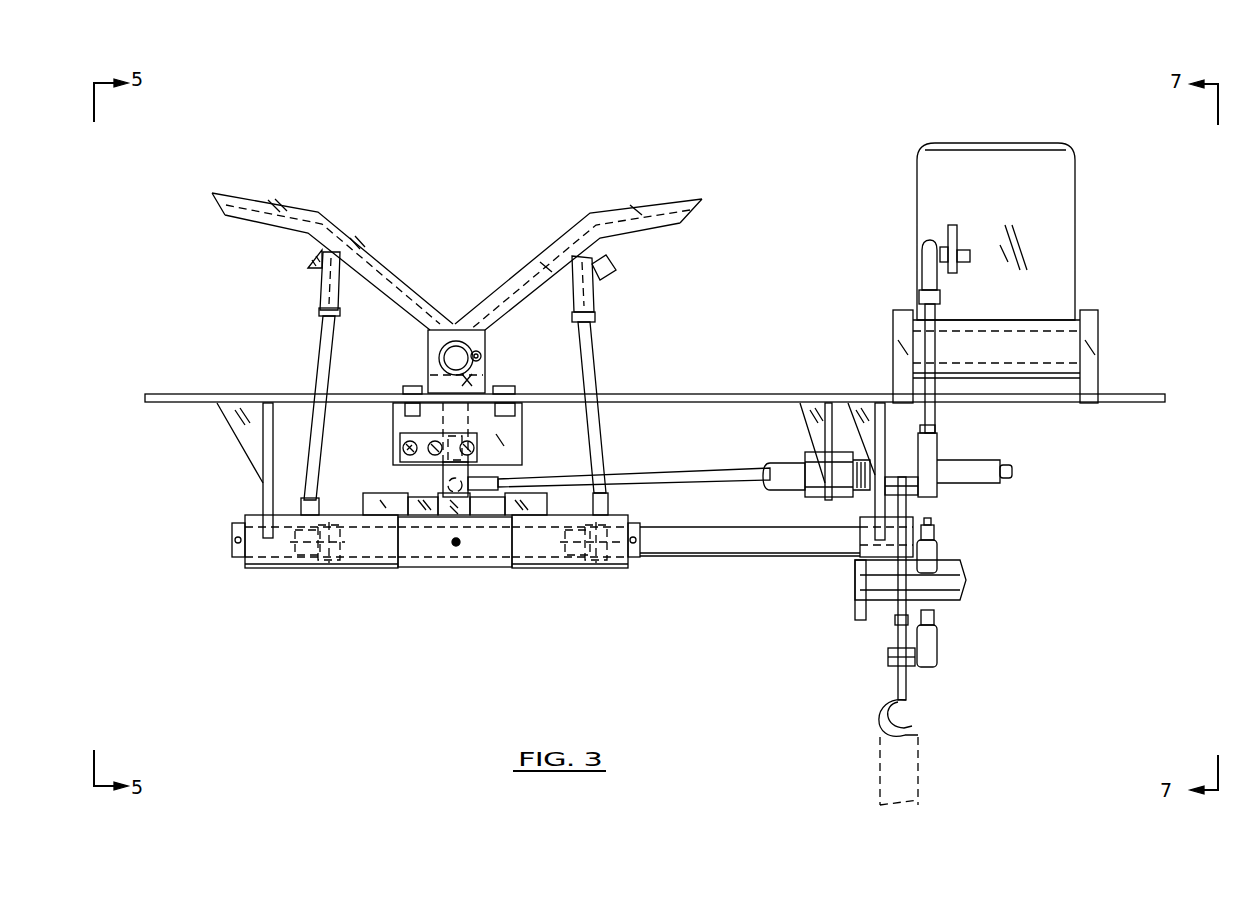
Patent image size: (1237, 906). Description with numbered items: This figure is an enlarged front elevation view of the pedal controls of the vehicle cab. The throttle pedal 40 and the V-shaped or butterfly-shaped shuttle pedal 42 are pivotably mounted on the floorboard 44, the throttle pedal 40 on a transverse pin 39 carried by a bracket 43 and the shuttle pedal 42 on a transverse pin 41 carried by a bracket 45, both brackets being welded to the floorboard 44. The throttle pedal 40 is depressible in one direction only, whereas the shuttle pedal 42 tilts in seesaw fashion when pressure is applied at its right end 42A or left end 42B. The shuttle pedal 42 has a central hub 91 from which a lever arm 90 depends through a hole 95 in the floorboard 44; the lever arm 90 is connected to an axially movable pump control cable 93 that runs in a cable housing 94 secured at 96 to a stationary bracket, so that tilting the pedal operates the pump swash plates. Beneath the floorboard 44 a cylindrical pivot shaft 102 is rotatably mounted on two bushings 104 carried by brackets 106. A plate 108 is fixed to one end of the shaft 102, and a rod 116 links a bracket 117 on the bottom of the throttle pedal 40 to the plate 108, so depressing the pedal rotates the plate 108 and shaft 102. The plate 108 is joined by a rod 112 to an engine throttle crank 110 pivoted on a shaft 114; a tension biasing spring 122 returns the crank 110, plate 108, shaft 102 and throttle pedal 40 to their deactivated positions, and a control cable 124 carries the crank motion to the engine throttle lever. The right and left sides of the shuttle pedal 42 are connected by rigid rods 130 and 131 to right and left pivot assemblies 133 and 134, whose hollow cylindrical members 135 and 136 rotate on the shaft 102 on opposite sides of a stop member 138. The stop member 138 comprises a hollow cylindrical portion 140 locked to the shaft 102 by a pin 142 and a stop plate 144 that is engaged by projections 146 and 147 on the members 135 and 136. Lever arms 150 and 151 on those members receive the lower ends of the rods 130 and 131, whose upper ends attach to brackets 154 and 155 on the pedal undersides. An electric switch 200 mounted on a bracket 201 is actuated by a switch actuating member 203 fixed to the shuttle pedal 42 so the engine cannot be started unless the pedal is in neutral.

The pin 39 is at (1095, 339).
The throttle pedal 40 is at (972, 147).
The pin 41 is at (468, 352).
The shuttle pedal 42 is at (457, 241).
The right end of shuttle pedal 42A is at (325, 215).
The left end of shuttle pedal 42B is at (637, 207).
The bracket 43 is at (1095, 376).
The floorboard 44 is at (172, 394).
The bracket 45 is at (478, 369).
The lever arm 90 is at (441, 477).
The central hub 91 is at (428, 370).
The pump control cable 93 is at (720, 466).
The cable housing 94 is at (972, 462).
The hole 95 is at (528, 398).
The cable housing end securement 96 is at (808, 456).
The pivot shaft 102 is at (720, 558).
The bushing 104 is at (265, 568).
The bracket 106 is at (262, 488).
The plate 108 is at (895, 621).
The engine throttle crank 110 is at (897, 686).
The rod 112 is at (937, 552).
The shaft 114 is at (960, 591).
The rod 116 is at (922, 266).
The bracket 117 is at (955, 236).
The biasing spring 122 is at (920, 762).
The control cable 124 is at (937, 655).
The rod 130 is at (323, 330).
The rod 131 is at (596, 326).
The right pivot assembly 133 is at (321, 564).
The left pivot assembly 134 is at (581, 585).
The hollow cylindrical member 135 is at (372, 570).
The hollow cylindrical member 136 is at (576, 561).
The stop member 138 is at (454, 561).
The hollow cylindrical portion 140 is at (500, 570).
The pin 142 is at (455, 546).
The stop plate 144 is at (449, 508).
The projection 146 is at (371, 497).
The projection 147 is at (540, 503).
The lever arm 150 is at (325, 560).
The lever arm 151 is at (590, 565).
The bracket 154 is at (308, 268).
The bracket 155 is at (608, 272).
The electric switch 200 is at (430, 445).
The bracket 201 is at (522, 418).
The switch actuating member 203 is at (500, 440).